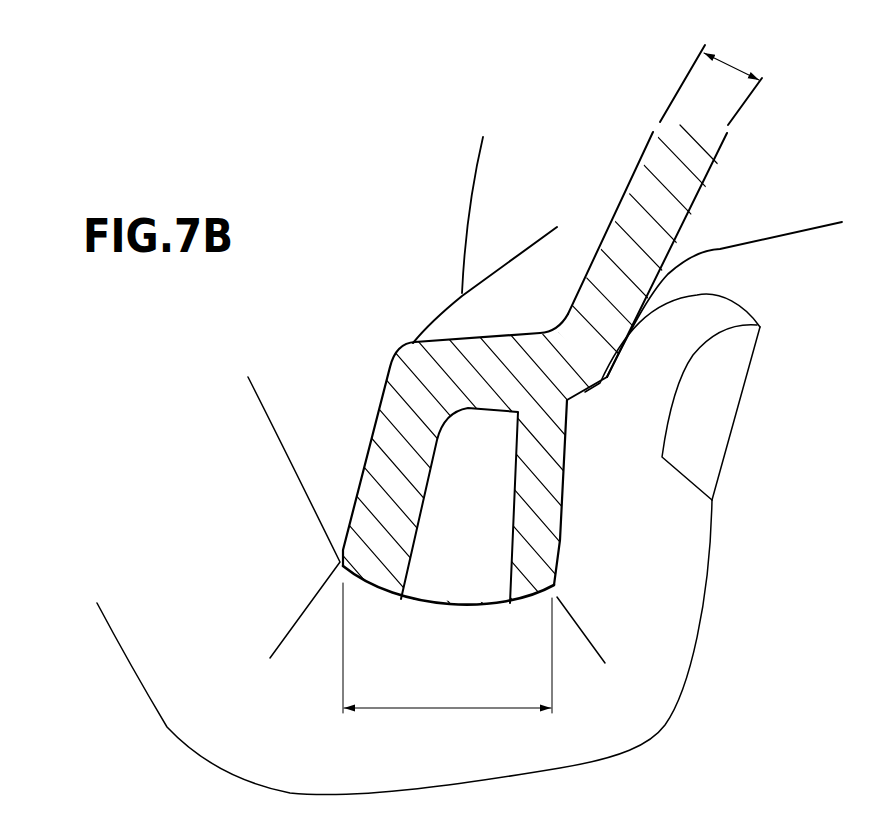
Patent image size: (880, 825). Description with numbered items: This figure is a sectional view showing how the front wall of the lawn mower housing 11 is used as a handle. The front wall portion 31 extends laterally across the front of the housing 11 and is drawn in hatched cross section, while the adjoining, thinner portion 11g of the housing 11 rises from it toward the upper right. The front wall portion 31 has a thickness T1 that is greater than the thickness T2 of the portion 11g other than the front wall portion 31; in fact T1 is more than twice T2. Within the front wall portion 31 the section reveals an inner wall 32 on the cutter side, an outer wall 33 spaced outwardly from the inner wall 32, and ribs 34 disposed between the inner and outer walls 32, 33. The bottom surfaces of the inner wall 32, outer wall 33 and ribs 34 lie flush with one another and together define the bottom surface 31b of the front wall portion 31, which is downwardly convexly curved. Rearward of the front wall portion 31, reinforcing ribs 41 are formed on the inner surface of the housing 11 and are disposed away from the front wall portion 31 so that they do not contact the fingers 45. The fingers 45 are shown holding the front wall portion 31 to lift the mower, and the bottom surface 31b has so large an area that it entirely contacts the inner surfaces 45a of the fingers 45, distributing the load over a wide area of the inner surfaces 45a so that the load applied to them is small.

The housing 11 is at (449, 211).
The portion other than the front wall portion 11g is at (646, 146).
The front wall portion 31 is at (369, 428).
The bottom surface of the front wall portion 31b is at (450, 608).
The inner wall 32 is at (543, 459).
The outer wall 33 is at (368, 490).
The ribs 34 is at (490, 497).
The reinforcing ribs 41 is at (803, 215).
The fingers 45 is at (180, 705).
The inner surfaces of the fingers 45a is at (480, 603).
The thickness of the front wall portion T1 is at (447, 661).
The thickness of the portion other than the front wall portion T2 is at (732, 67).